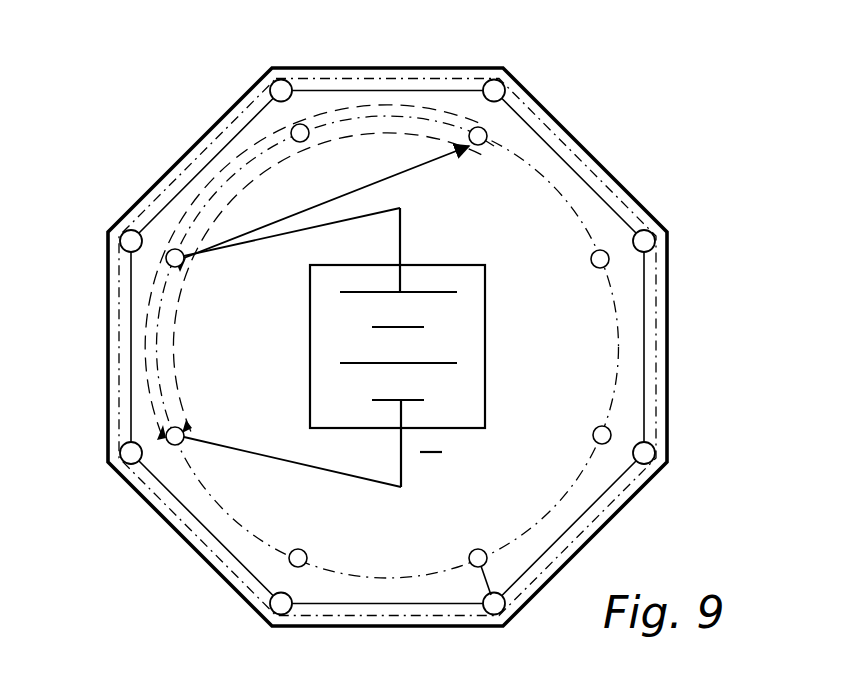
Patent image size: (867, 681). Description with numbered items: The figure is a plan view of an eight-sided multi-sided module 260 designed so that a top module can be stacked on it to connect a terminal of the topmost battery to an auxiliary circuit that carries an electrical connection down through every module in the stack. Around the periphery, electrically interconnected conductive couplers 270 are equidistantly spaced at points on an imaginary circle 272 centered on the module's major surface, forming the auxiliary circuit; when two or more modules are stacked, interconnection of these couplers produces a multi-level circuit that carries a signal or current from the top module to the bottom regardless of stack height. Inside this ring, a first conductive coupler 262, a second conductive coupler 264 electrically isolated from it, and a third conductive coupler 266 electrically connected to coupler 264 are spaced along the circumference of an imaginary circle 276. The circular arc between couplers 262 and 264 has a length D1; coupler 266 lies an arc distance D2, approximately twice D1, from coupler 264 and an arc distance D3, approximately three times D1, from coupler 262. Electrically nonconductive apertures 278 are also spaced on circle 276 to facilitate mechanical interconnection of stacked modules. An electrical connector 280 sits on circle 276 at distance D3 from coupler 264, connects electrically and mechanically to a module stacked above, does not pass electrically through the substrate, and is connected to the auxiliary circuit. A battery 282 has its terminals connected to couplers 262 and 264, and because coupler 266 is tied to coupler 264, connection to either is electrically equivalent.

The multi-sided module 260 is at (172, 99).
The first conductive coupler 262 is at (164, 430).
The second conductive coupler 264 is at (170, 250).
The third conductive coupler 266 is at (476, 122).
The conductive couplers 270 is at (270, 86).
The imaginary circle 272 is at (548, 93).
The imaginary circle 276 is at (530, 166).
The apertures 278 is at (592, 264).
The electrical connector 280 is at (473, 550).
The battery 282 is at (485, 342).
The arc length D1 is at (173, 342).
The arc distance D2 is at (283, 152).
The arc distance D3 is at (330, 104).